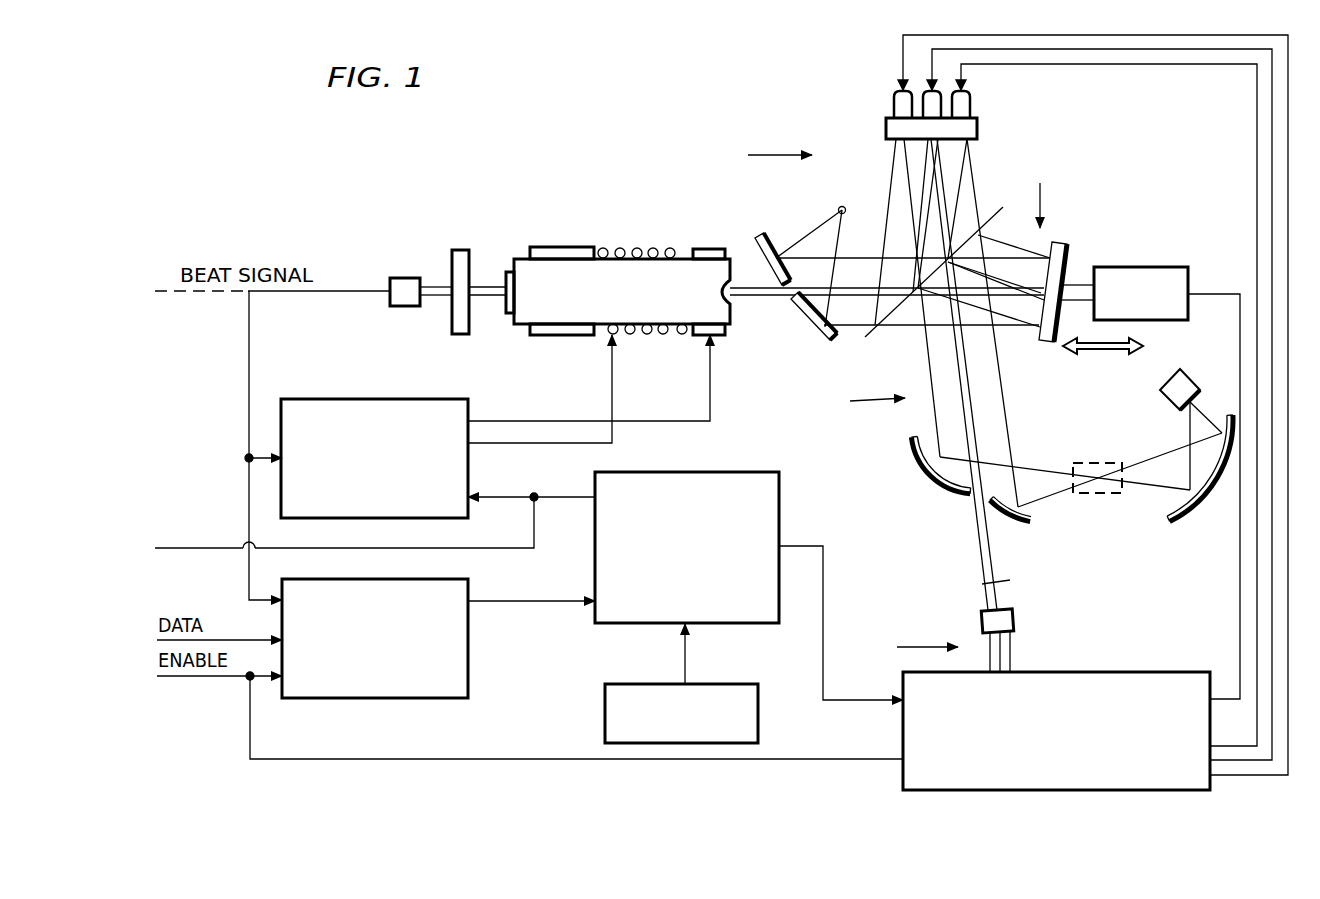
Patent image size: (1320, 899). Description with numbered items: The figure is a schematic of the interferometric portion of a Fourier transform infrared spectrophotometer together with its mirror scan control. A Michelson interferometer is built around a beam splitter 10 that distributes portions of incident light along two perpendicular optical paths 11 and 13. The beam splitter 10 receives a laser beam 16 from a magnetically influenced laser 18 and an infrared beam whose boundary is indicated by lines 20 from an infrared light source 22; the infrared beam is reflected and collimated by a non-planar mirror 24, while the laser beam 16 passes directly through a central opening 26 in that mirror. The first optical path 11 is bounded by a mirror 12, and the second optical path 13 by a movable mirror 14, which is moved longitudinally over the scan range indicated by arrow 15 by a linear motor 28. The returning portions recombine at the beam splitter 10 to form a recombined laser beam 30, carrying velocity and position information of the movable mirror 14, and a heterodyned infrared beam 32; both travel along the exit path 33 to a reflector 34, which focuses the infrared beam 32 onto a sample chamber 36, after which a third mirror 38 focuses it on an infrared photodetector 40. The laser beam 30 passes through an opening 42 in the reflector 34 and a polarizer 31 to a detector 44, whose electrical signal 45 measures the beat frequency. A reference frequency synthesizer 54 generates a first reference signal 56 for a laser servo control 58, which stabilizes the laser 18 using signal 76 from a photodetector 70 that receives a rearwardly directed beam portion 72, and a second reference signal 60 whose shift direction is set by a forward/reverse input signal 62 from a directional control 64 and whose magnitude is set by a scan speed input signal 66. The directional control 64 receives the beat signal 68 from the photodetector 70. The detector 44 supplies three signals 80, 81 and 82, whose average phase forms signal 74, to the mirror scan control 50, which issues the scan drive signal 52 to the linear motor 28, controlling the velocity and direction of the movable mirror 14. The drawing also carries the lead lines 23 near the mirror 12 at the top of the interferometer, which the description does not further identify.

The beam splitter 10 is at (988, 233).
The first optical path 11 is at (767, 155).
The mirror 12 is at (977, 126).
The second optical path 13 is at (1039, 194).
The movable mirror 14 is at (1068, 250).
The arrow 15 is at (1092, 348).
The laser beam 16 is at (765, 298).
The magnetically influenced laser 18 is at (687, 255).
The infrared light beam 20 is at (818, 228).
The infrared light source 22 is at (841, 207).
The detector beams 23 is at (947, 153).
The non-planar mirror 24 is at (826, 338).
The opening 26 is at (789, 303).
The linear motor 28 is at (1152, 268).
The recombined laser beam 30 is at (967, 370).
The polarizer 31 is at (987, 583).
The heterodyned beam 32 is at (938, 430).
The exit path 33 is at (861, 402).
The reflector 34 is at (1010, 522).
The sample chamber 36 is at (1095, 493).
The third mirror 38 is at (1214, 482).
The infrared photodetector 40 is at (1199, 371).
The opening 42 is at (972, 494).
The detector 44 is at (982, 622).
The electrical signal 45 is at (910, 641).
The mirror scan control 50 is at (1192, 672).
The mirror scan drive signal 52 is at (1240, 548).
The reference frequency synthesizer 54 is at (733, 472).
The reference signal 56 is at (579, 500).
The laser servo control 58 is at (426, 399).
The second reference signal 60 is at (822, 672).
The forward/reverse input signal 62 is at (558, 603).
The directional control 64 is at (468, 647).
The scan speed input signal 66 is at (687, 668).
The signal 68 is at (249, 598).
The photodetector 70 is at (409, 307).
The rearwardly directed portion of the laser beam 72 is at (444, 282).
The signal 74 is at (233, 679).
The signal 76 is at (249, 456).
The signal 80 is at (1003, 636).
The signal 81 is at (1011, 648).
The signal 82 is at (1011, 660).